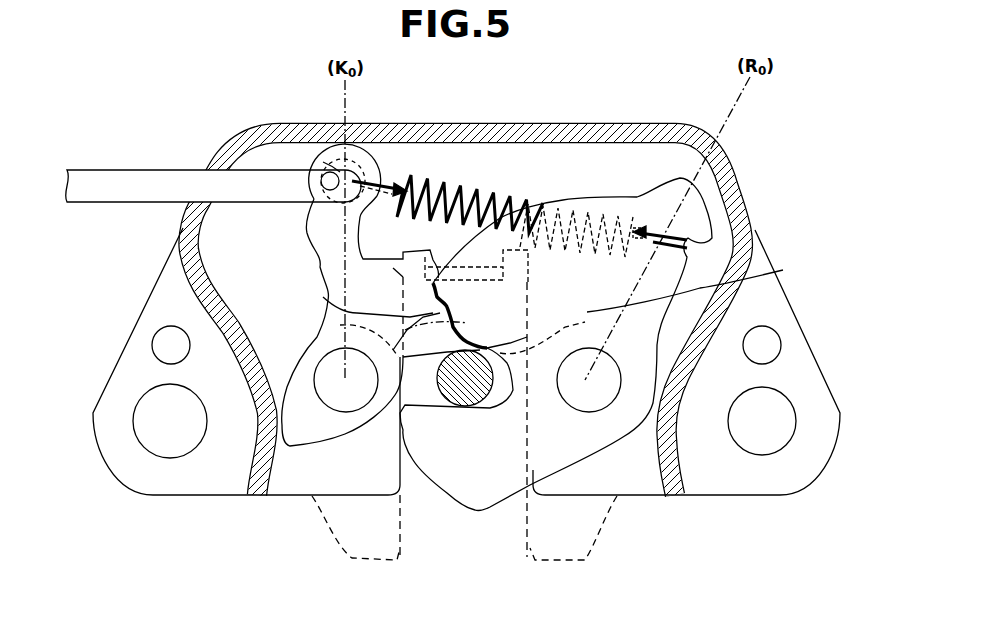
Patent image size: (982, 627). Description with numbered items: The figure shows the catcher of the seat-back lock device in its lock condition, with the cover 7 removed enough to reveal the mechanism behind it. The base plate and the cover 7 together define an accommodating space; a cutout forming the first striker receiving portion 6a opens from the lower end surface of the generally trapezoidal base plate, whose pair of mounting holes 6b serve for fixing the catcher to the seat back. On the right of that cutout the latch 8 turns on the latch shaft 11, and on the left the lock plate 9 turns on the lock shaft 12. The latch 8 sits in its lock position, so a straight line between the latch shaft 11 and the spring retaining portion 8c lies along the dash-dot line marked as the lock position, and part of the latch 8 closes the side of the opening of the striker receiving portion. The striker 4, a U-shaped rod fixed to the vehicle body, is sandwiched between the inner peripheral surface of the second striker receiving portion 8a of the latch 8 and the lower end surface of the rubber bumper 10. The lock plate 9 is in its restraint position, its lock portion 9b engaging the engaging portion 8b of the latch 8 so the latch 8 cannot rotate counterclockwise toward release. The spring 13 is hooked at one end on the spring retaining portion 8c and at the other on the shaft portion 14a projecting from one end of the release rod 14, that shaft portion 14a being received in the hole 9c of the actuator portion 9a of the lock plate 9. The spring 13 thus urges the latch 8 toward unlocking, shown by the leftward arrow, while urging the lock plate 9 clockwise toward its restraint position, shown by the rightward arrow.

The striker 4 is at (463, 393).
The first striker receiving portion 6a is at (420, 387).
The mounting holes 6b is at (168, 430).
The cover 7 is at (632, 123).
The latch 8 is at (597, 197).
The second striker receiving portion 8a is at (500, 392).
The engaging portion 8b is at (440, 290).
The spring retaining portion 8c is at (710, 235).
The lock plate 9 is at (317, 260).
The actuator portion 9a is at (323, 163).
The lock portion 9b is at (323, 297).
The hole 9c is at (323, 162).
The rubber bumper 10 is at (783, 270).
The latch shaft 11 is at (591, 402).
The lock shaft 12 is at (343, 398).
The spring 13 is at (453, 193).
The release rod 14 is at (93, 177).
The shaft portion 14a is at (322, 189).